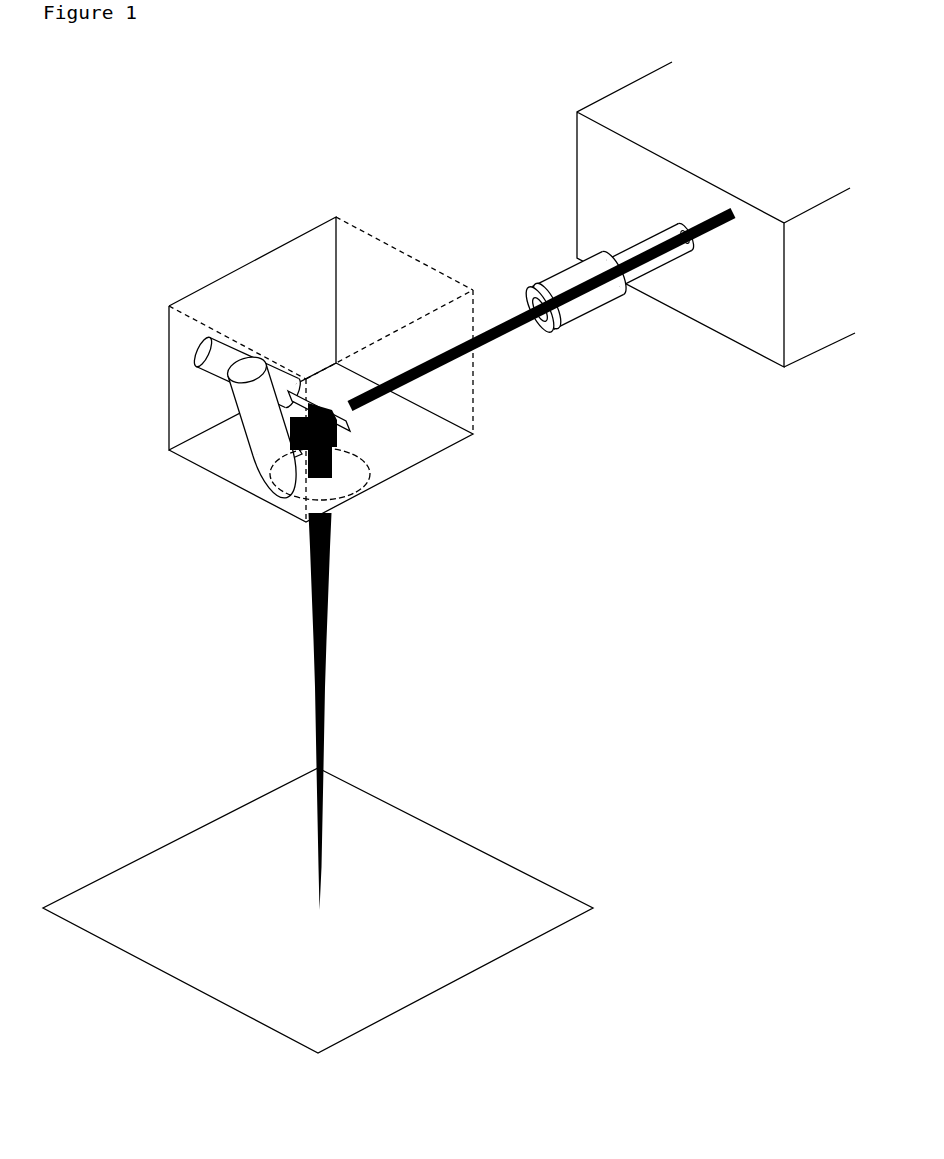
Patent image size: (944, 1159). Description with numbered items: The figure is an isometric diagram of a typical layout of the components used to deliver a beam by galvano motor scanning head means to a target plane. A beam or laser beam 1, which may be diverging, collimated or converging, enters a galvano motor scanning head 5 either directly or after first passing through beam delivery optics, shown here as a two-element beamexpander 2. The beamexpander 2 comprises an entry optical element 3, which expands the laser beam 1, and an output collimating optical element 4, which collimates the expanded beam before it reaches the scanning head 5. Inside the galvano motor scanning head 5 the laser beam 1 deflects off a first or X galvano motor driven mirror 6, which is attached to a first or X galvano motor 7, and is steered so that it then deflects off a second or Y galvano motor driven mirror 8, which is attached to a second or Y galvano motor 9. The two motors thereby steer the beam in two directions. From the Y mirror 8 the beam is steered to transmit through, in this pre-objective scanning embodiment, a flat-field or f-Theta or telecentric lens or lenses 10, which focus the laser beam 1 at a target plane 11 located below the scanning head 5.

The laser beam 1 is at (716, 214).
The two-element beamexpander 2 is at (580, 290).
The entry optical element 3 is at (645, 248).
The output collimating optical element 4 is at (540, 299).
The galvano motor scanning head 5 is at (321, 364).
The first or X galvano motor driven mirror 6 is at (271, 471).
The first or X galvano motor 7 is at (256, 427).
The second or Y galvano motor driven mirror 8 is at (352, 432).
The second or Y galvano motor 9 is at (195, 353).
The flat-field or f-Theta or telecentric lens 10 is at (347, 488).
The target plane 11 is at (318, 910).